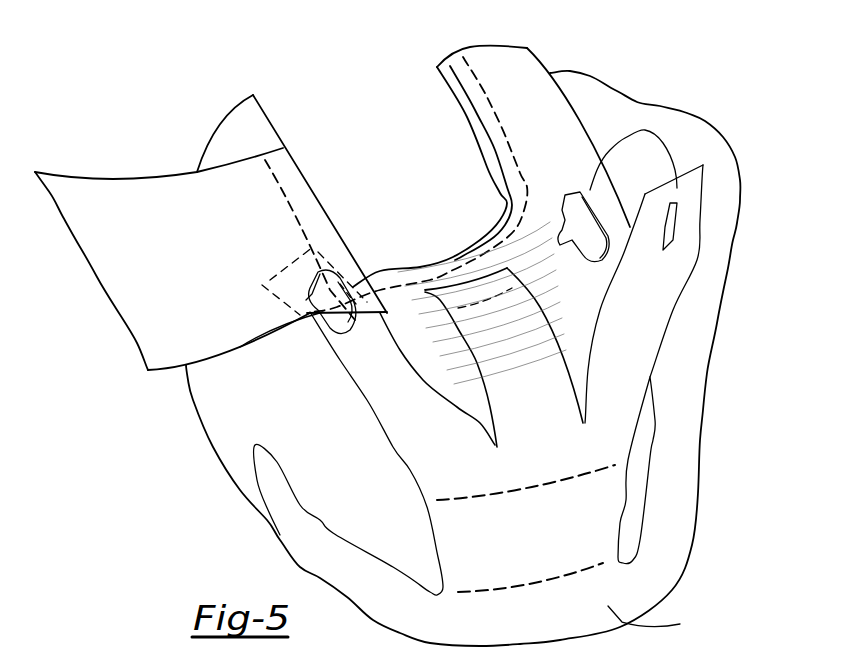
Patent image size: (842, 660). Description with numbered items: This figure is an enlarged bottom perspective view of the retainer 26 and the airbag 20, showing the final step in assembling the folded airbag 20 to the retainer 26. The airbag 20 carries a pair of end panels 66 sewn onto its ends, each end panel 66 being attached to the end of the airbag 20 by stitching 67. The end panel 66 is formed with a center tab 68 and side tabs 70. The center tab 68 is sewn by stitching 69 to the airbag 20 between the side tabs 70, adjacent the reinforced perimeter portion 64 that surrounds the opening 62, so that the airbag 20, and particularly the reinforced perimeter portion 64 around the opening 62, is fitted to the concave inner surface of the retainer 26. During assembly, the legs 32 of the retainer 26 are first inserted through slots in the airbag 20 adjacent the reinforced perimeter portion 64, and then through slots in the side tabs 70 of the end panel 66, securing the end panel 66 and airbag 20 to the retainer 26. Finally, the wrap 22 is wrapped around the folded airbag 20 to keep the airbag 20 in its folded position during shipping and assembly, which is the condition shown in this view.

The airbag 20 is at (700, 493).
The wrap 22 is at (162, 178).
The retainer 26 is at (434, 75).
The legs 32 is at (580, 248).
The opening 62 is at (458, 114).
The reinforced perimeter portion 64 is at (488, 243).
The end panel 66 is at (607, 604).
The stitching 67 is at (480, 497).
The center tab 68 is at (515, 270).
The stitching 69 is at (507, 270).
The side tabs 70 is at (700, 254).